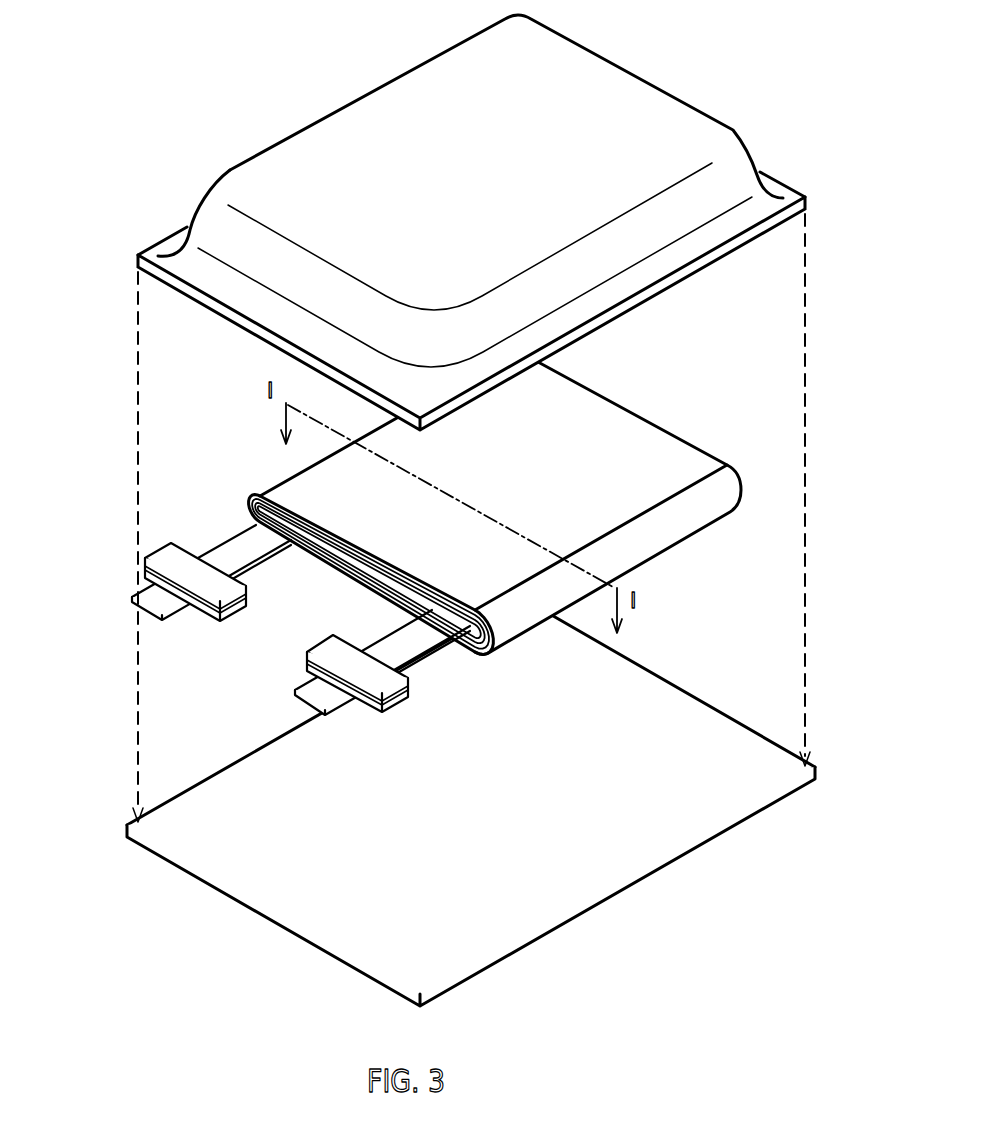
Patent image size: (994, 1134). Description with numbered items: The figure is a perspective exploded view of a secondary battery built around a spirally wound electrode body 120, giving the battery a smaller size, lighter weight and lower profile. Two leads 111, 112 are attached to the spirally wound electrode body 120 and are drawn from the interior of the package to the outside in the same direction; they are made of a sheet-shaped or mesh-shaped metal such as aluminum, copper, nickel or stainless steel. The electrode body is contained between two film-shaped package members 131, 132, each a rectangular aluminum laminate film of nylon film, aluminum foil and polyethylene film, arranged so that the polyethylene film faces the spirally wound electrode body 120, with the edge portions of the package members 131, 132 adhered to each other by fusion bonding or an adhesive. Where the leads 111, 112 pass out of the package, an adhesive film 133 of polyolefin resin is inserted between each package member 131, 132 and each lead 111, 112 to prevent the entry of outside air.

The lead 111 is at (308, 688).
The lead 112 is at (143, 588).
The spirally wound electrode body 120 is at (575, 415).
The package member 131 is at (618, 88).
The package member 132 is at (682, 712).
The adhesive film 133 is at (330, 640).